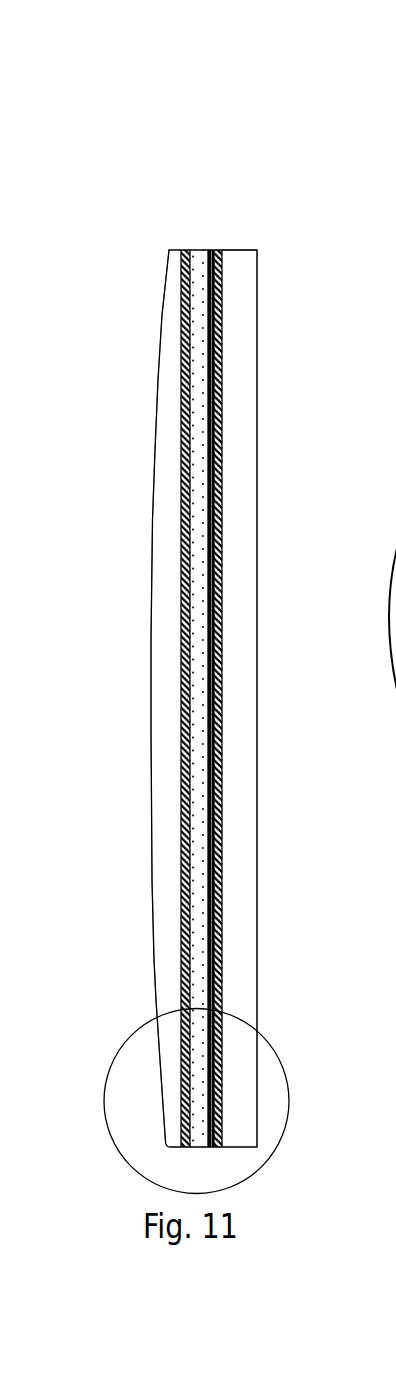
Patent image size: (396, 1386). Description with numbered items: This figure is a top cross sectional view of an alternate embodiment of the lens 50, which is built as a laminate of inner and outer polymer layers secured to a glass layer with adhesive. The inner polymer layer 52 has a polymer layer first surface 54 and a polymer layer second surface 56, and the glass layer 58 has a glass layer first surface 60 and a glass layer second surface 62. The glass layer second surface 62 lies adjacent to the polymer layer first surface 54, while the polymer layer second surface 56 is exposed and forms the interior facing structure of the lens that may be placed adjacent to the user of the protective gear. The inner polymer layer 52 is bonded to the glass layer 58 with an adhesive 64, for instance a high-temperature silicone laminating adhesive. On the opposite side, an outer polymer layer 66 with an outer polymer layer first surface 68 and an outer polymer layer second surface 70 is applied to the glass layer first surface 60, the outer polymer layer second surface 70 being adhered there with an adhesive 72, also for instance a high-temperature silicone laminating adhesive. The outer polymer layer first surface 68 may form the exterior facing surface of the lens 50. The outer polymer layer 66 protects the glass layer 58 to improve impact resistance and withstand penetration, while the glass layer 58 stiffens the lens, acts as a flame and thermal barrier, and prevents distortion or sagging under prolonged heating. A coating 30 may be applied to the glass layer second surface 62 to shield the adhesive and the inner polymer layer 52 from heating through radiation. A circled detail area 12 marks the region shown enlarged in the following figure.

The detail area 12 is at (290, 1100).
The coating 30 is at (202, 250).
The lens 50 is at (294, 246).
The inner polymer layer 52 is at (247, 250).
The polymer layer first surface 54 is at (226, 834).
The polymer layer second surface 56 is at (259, 850).
The glass layer 58 is at (186, 250).
The glass layer first surface 60 is at (181, 710).
The glass layer second surface 62 is at (218, 699).
The adhesive 64 is at (217, 250).
The outer polymer layer 66 is at (157, 303).
The outer polymer layer first surface 68 is at (151, 450).
The outer polymer layer second surface 70 is at (180, 437).
The adhesive 72 is at (182, 250).